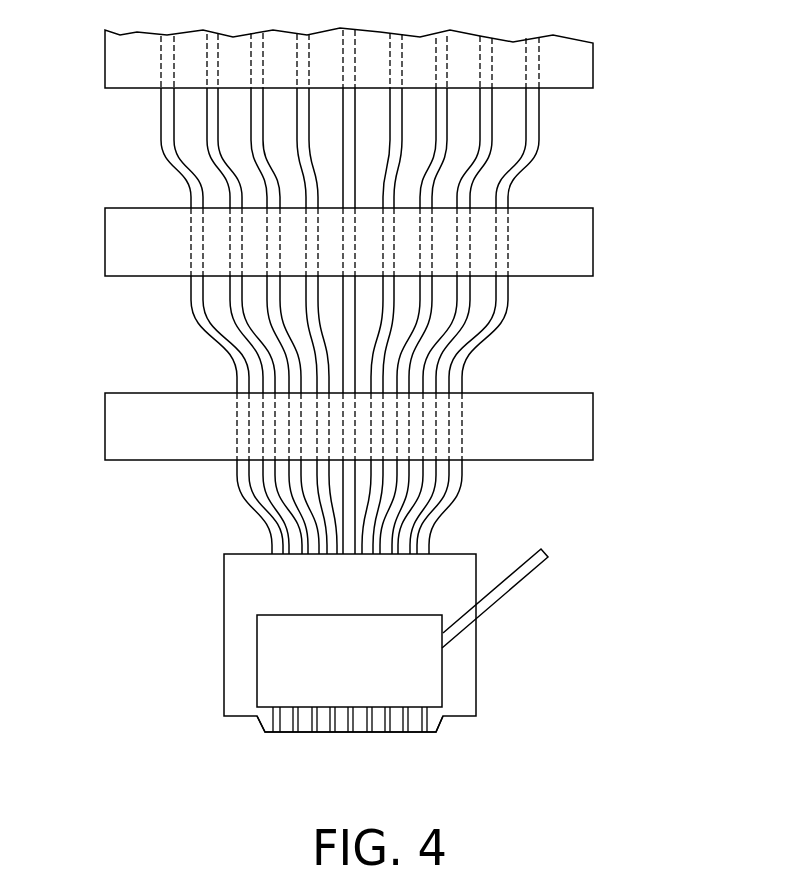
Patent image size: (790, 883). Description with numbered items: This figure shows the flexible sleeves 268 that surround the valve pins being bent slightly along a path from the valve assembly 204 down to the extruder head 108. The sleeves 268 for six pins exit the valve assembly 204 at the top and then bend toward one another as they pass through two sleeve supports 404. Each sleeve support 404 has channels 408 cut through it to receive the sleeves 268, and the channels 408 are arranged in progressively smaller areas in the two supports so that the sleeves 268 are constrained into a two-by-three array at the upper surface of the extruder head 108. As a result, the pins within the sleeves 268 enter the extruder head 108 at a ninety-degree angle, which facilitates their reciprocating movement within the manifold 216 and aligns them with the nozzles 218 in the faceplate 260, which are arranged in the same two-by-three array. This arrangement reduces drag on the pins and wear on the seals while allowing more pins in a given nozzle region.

The extruder head 108 is at (199, 640).
The valve assembly 204 is at (582, 64).
The manifold 216 is at (413, 675).
The nozzles 218 is at (300, 737).
The faceplate 260 is at (443, 723).
The sleeves 268 is at (303, 123).
The sleeve supports 404 is at (582, 245).
The channels 408 is at (307, 262).